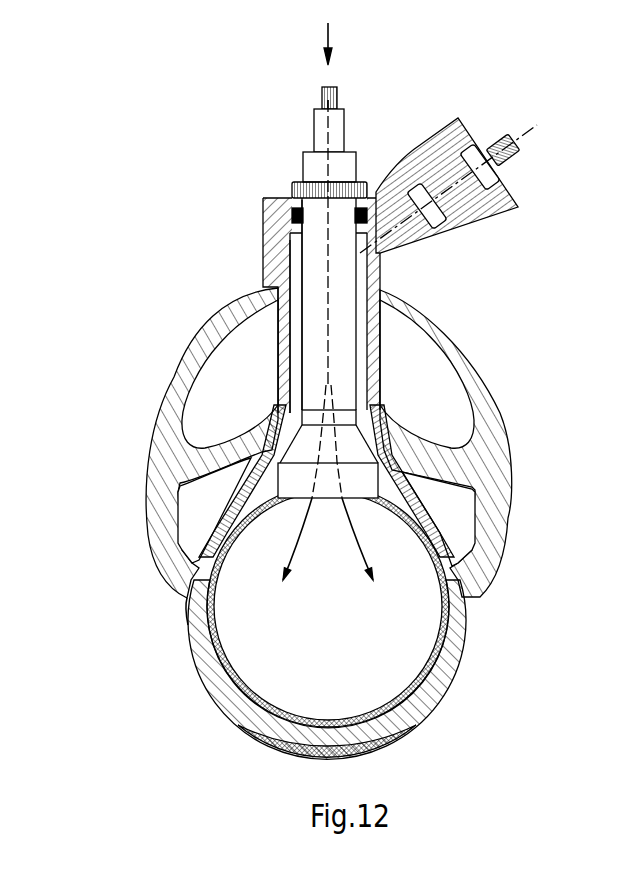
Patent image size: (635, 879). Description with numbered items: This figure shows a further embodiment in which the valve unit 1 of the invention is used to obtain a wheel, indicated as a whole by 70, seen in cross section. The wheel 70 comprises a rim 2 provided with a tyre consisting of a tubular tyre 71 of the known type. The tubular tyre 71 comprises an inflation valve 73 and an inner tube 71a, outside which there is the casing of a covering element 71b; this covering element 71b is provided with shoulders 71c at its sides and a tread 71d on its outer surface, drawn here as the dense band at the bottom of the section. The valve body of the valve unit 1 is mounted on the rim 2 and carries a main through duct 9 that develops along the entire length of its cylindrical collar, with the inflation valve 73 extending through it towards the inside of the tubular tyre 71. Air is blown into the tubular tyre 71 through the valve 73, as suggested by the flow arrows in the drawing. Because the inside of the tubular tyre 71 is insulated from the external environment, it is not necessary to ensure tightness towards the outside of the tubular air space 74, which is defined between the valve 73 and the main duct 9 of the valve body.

The valve unit 1 is at (223, 162).
The rim 2 is at (488, 460).
The main through duct 9 is at (362, 253).
The wheel 70 is at (53, 435).
The tubular tyre 71 is at (330, 646).
The inner tube 71a is at (440, 607).
The covering element 71b is at (213, 667).
The shoulders 71c is at (197, 617).
The tread 71d is at (285, 748).
The inflation valve 73 is at (338, 313).
The tubular air space 74 is at (298, 302).